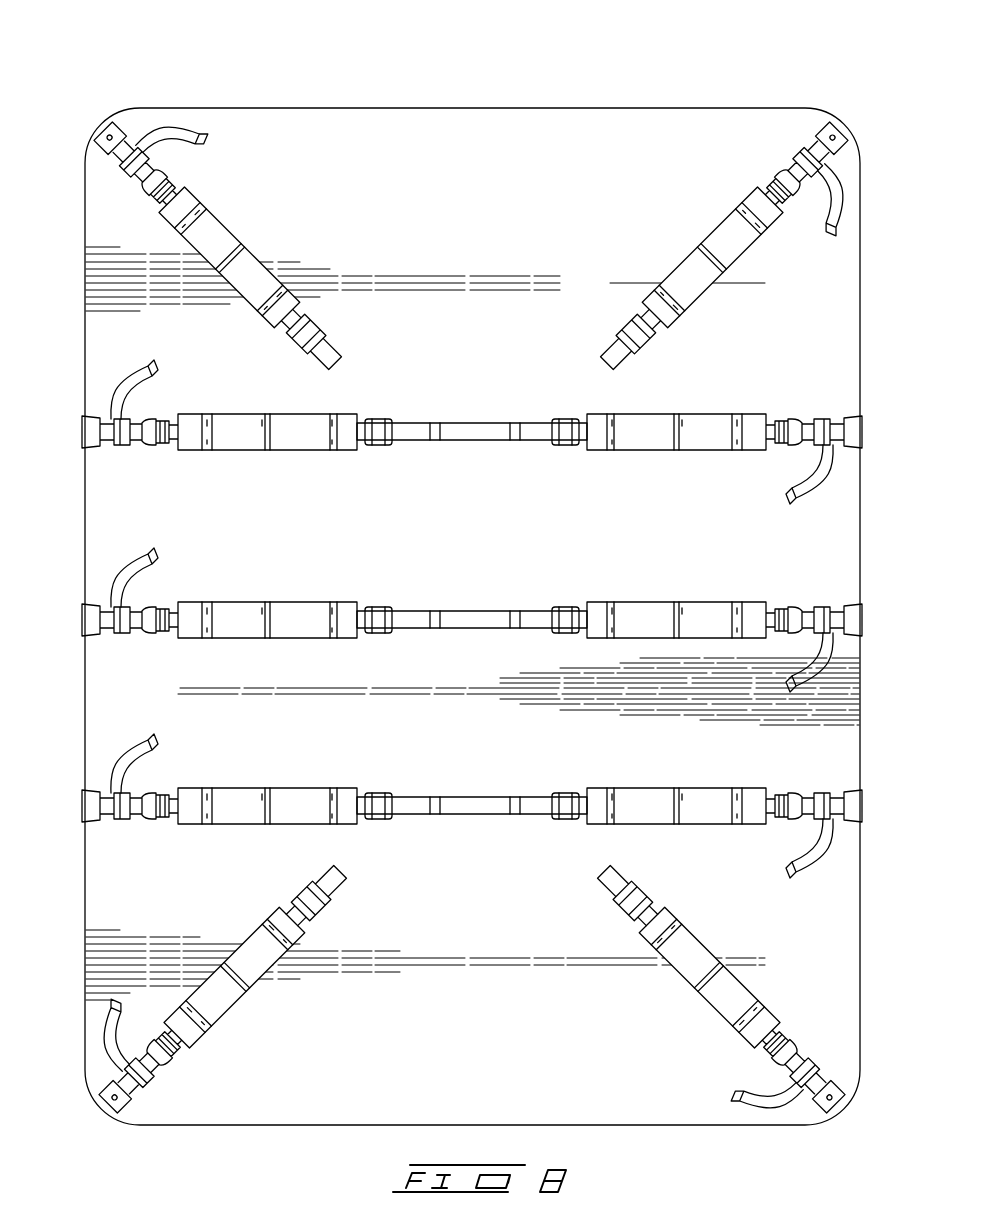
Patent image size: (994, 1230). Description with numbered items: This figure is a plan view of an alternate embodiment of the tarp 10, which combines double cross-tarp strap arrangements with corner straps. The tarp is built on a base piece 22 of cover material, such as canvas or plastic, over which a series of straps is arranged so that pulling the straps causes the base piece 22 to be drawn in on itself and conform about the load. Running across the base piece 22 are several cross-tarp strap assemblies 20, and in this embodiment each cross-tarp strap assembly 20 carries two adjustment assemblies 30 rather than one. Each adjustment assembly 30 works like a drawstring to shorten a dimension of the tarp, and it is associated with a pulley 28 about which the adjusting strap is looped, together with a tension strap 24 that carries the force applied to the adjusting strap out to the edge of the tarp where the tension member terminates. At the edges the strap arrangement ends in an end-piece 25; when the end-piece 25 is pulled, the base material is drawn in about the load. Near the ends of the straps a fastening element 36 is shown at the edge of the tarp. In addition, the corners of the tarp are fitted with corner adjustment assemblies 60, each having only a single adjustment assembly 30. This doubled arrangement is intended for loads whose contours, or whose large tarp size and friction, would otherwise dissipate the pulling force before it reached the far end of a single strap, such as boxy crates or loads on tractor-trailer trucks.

The tarp 10 is at (697, 60).
The cross-tarp strap assembly 20 is at (727, 390).
The base piece 22 is at (427, 128).
The tension strap 24 is at (470, 420).
The end-piece 25 is at (198, 142).
The pulley 28 is at (380, 792).
The adjustment assembly 30 is at (233, 228).
The fastener 36 is at (150, 644).
The corner adjustment assembly 60 is at (300, 250).